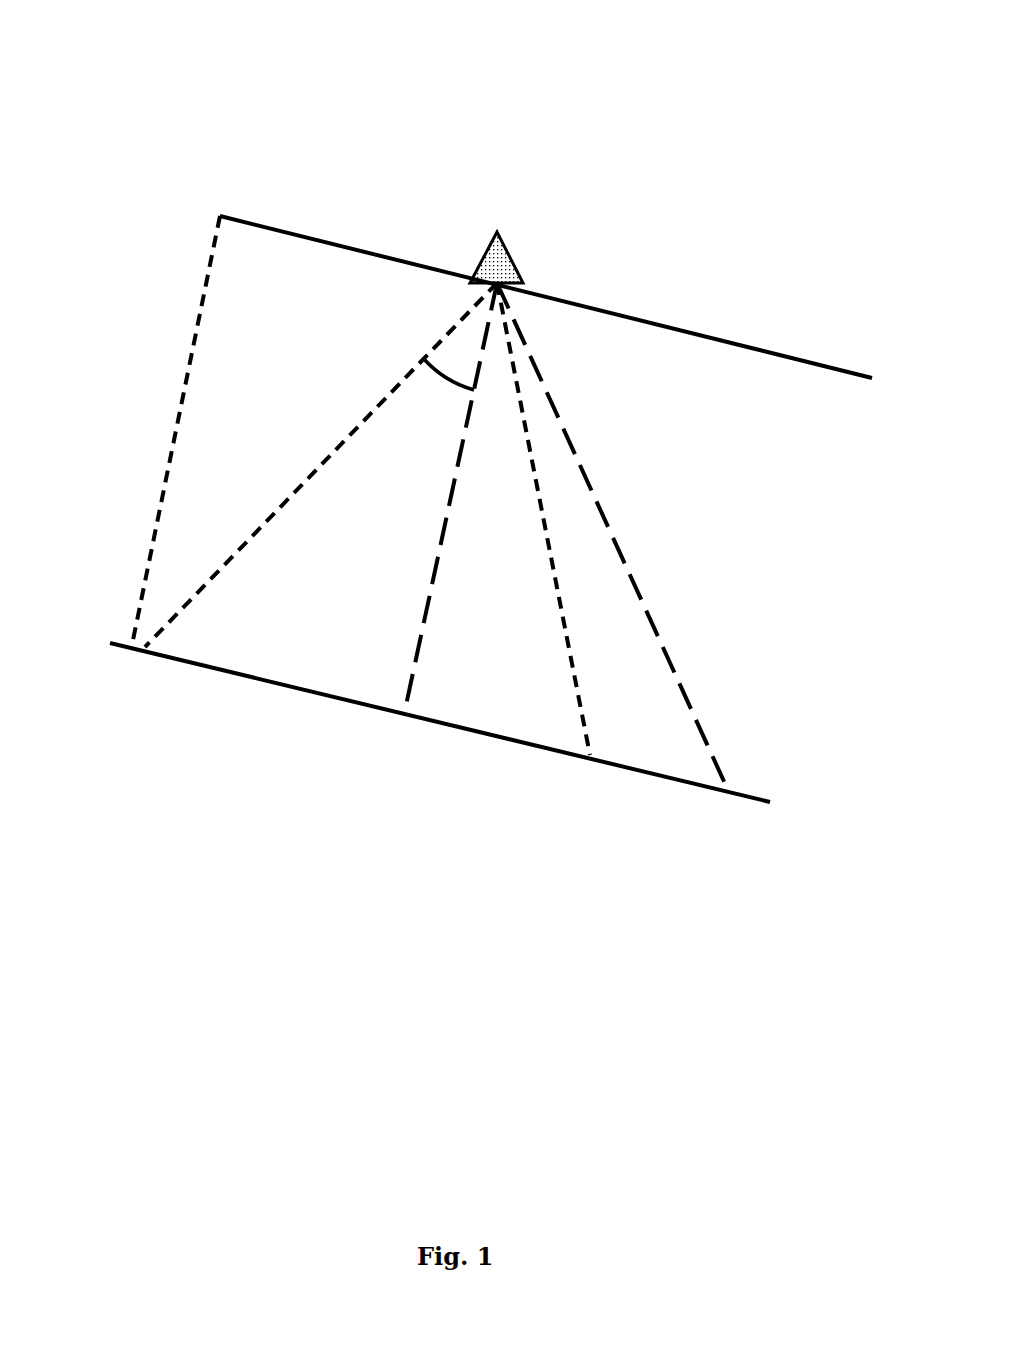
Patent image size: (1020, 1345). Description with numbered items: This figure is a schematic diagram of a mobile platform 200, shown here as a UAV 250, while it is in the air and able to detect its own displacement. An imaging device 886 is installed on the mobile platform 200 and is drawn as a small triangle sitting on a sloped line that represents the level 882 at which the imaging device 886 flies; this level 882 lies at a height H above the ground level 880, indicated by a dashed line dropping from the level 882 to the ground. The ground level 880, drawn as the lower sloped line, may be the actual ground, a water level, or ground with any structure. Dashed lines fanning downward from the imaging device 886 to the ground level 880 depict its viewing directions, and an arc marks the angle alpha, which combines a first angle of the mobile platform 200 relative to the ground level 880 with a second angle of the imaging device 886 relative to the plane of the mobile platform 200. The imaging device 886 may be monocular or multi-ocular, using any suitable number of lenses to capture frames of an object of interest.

The mobile platform 200 is at (716, 176).
The UAV 250 is at (483, 262).
The ground level 880 is at (180, 664).
The level 882 is at (725, 333).
The imaging device 886 is at (511, 249).